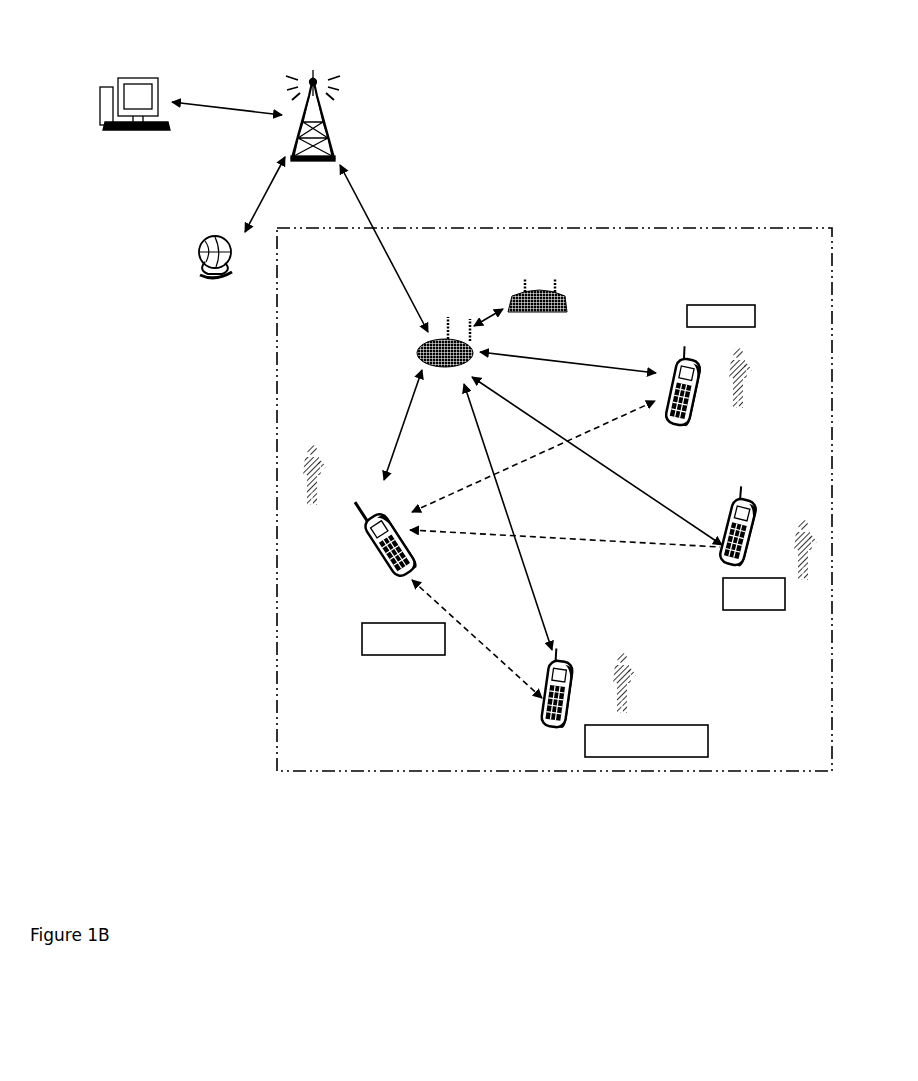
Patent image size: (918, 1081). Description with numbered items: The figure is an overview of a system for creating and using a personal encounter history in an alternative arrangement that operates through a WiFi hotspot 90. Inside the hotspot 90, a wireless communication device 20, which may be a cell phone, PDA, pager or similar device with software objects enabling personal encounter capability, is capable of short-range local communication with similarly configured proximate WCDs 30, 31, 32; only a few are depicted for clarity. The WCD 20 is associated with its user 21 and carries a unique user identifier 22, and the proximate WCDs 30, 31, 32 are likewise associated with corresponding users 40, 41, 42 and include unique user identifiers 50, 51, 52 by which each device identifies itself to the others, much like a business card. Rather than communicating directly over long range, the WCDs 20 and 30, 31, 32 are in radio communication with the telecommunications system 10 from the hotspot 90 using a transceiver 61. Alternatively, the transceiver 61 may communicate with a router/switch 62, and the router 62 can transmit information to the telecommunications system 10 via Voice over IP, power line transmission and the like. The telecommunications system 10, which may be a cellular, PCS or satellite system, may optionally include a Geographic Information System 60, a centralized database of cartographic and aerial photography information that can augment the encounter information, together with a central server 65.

The telecommunications system 10 is at (313, 70).
The central server 65 is at (133, 74).
The Geographic Information System 60 is at (197, 254).
The WiFi hotspot 90 is at (557, 226).
The transceiver 61 is at (415, 346).
The router/switch 62 is at (543, 273).
The wireless communication device 20 is at (360, 540).
The user 21 is at (317, 518).
The unique user identifier 22 is at (403, 660).
The proximate WCD 30 is at (683, 356).
The proximate WCD 31 is at (738, 482).
The proximate WCD 32 is at (550, 730).
The user 40 is at (768, 377).
The user 41 is at (808, 512).
The user 42 is at (650, 687).
The unique user identifier 50 is at (757, 313).
The unique user identifier 51 is at (722, 593).
The unique user identifier 52 is at (709, 738).